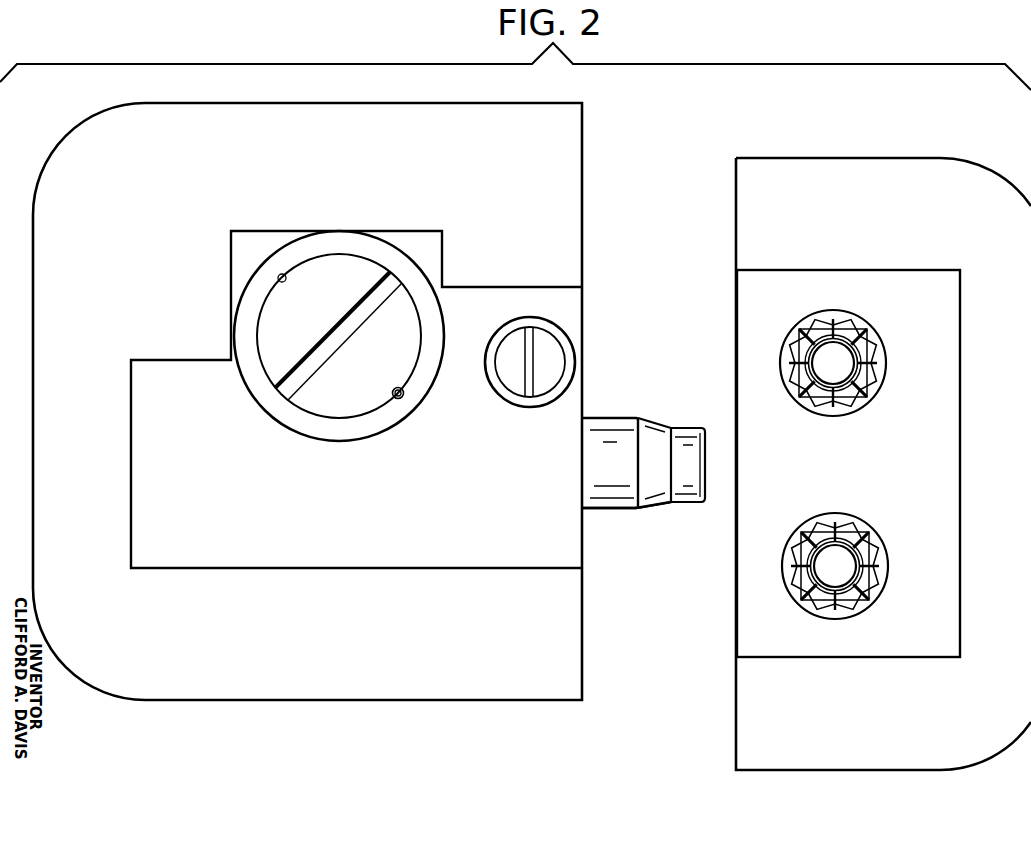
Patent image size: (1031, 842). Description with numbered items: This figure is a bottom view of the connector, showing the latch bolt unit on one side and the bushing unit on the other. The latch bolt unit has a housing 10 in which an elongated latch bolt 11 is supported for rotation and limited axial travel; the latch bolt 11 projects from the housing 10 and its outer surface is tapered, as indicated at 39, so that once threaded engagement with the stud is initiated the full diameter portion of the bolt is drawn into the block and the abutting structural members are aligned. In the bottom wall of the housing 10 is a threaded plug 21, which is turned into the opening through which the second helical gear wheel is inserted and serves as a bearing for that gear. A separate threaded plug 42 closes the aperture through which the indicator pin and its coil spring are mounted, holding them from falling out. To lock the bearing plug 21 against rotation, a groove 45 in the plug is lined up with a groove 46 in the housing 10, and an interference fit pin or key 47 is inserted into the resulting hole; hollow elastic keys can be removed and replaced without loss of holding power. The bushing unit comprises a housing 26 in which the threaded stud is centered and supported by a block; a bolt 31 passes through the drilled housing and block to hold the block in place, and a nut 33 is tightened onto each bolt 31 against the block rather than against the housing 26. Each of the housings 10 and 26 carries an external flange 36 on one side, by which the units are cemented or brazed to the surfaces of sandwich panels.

The housing 10 is at (438, 243).
The latch bolt 11 is at (614, 428).
The threaded plug 21 is at (338, 263).
The housing 26 is at (845, 279).
The bolt 31 is at (842, 357).
The nut 33 is at (876, 345).
The external flange 36 is at (570, 231).
The tapered outer surface 39 is at (655, 510).
The threaded plug 42 is at (531, 397).
The groove 45 is at (281, 283).
The groove 46 is at (399, 399).
The pin or key 47 is at (400, 388).